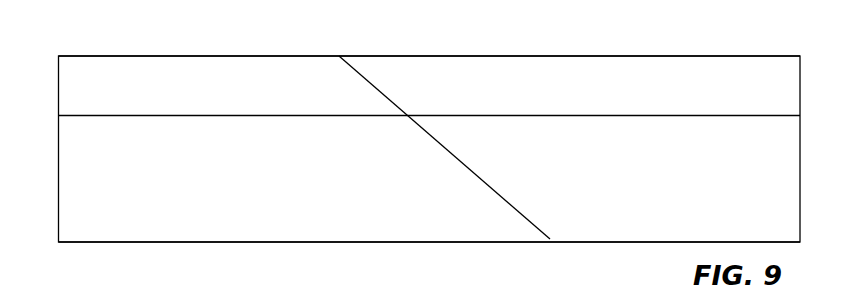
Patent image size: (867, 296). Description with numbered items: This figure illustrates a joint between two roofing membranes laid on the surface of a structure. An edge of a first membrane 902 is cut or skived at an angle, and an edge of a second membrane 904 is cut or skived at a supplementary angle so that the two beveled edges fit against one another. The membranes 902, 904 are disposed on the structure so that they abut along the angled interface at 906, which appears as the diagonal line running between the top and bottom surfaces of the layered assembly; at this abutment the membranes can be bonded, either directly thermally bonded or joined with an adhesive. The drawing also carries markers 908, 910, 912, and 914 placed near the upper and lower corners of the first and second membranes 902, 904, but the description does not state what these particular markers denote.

The first membrane 902 is at (180, 31).
The second membrane 904 is at (592, 35).
The abutment 906 is at (432, 133).
The upper left region 908 is at (129, 80).
The lower left corner 910 is at (135, 207).
The upper right region 912 is at (722, 83).
The lower right region 914 is at (633, 215).